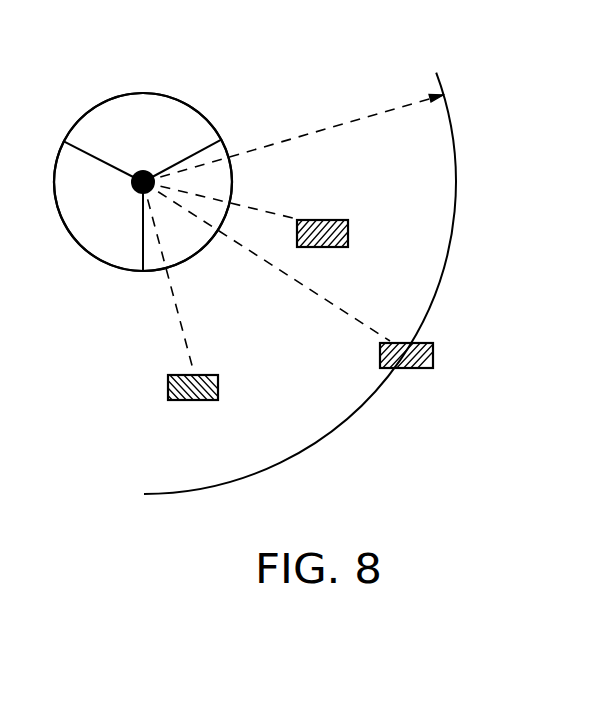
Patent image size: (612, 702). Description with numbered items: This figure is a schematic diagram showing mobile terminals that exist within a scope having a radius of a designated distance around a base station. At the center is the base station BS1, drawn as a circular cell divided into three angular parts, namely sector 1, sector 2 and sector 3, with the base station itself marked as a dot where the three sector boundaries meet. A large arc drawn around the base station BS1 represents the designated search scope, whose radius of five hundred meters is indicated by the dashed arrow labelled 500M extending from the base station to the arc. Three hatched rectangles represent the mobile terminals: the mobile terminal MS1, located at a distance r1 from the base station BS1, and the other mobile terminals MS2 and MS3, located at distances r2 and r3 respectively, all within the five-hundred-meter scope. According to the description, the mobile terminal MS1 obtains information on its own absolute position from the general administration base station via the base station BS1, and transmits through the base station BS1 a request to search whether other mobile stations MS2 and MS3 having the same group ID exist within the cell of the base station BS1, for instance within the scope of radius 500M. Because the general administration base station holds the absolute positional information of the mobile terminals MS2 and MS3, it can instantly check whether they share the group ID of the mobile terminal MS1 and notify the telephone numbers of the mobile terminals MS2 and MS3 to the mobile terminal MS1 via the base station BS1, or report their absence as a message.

The base station BS1 is at (169, 154).
The sector 1 is at (143, 131).
The sector 2 is at (187, 205).
The sector 3 is at (98, 206).
The radius of designated distance 500M is at (299, 283).
The distance to mobile terminal MS1 r1 is at (220, 198).
The distance to mobile terminal MS2 r2 is at (177, 277).
The distance to mobile terminal MS3 r3 is at (266, 261).
The mobile terminal MS1 is at (339, 233).
The mobile terminal MS2 is at (175, 388).
The mobile terminal MS3 is at (423, 356).